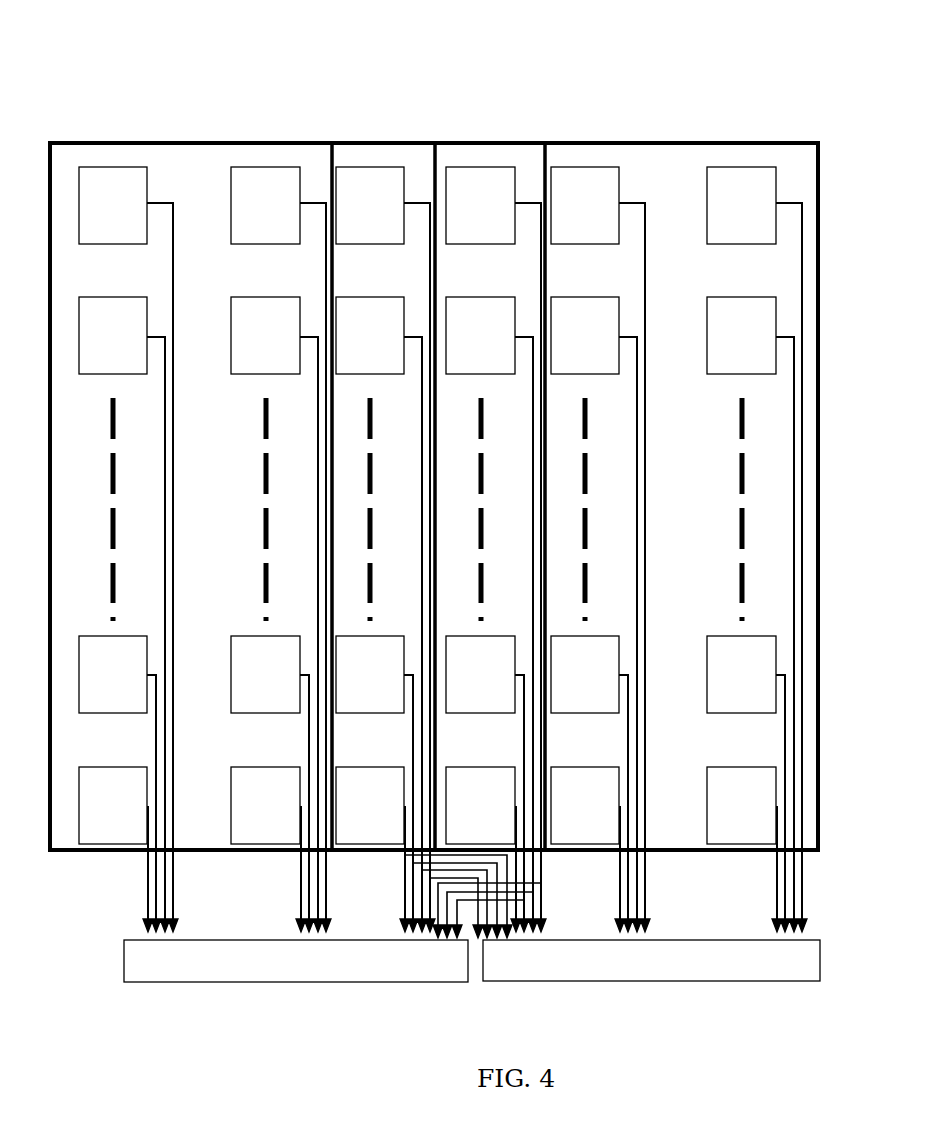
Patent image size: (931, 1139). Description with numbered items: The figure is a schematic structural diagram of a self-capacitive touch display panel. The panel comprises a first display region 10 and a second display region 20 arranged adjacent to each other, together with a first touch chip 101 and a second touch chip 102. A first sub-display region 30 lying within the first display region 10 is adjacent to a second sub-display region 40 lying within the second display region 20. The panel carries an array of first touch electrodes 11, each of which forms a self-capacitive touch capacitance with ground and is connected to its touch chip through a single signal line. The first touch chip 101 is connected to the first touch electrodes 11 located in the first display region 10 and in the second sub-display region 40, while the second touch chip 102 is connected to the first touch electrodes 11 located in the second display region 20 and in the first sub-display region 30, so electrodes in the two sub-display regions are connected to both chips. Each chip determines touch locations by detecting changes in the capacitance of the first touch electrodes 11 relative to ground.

The first display region 10 is at (435, 90).
The second display region 20 is at (822, 90).
The first sub-display region 30 is at (335, 138).
The second sub-display region 40 is at (435, 138).
The first touch electrode 11 is at (147, 200).
The first touch chip 101 is at (296, 961).
The second touch chip 102 is at (651, 960).